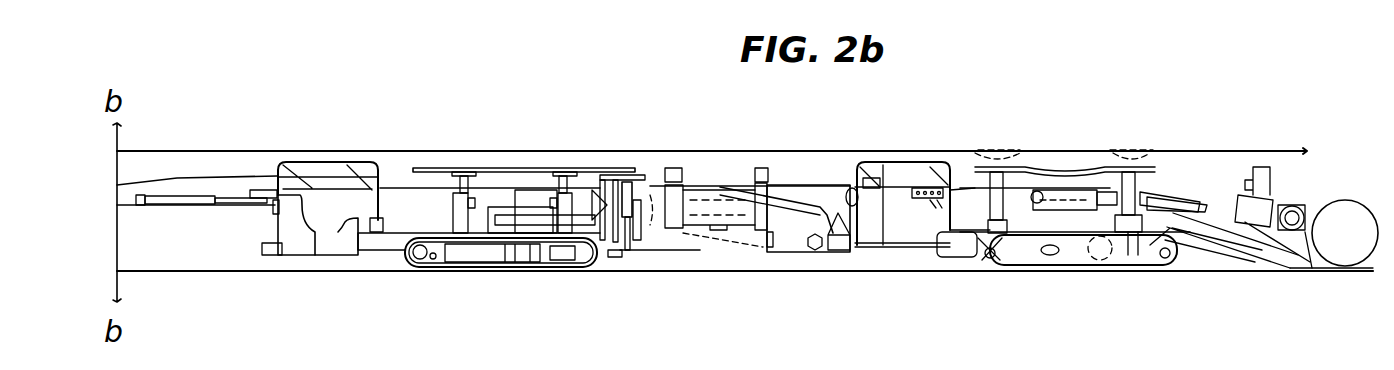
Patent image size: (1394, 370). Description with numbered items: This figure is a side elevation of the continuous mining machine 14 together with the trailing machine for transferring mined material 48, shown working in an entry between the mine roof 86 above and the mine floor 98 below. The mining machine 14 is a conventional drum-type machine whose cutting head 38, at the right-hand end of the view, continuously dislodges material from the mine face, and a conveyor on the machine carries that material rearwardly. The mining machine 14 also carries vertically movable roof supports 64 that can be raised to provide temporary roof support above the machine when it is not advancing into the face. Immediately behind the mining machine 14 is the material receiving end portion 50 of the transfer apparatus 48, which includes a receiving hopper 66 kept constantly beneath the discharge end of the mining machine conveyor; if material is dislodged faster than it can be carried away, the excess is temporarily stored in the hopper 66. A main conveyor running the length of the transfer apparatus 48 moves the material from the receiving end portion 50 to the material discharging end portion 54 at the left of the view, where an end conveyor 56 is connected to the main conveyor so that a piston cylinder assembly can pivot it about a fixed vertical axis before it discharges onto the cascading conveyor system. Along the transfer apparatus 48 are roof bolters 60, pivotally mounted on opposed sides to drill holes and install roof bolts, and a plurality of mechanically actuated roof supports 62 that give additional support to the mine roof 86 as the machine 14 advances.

The continuous mining machine 14 is at (966, 156).
The cutting head 38 is at (1352, 212).
The machine for transferring mined material 48 is at (537, 161).
The material receiving end portion 50 is at (840, 250).
The material discharging end portion 54 is at (207, 166).
The end conveyor 56 is at (133, 197).
The roof bolters 60 is at (627, 190).
The mechanically actuated roof supports 62 is at (430, 168).
The vertically movable roof supports 64 is at (1150, 175).
The receiving hopper 66 is at (805, 245).
The mine roof 86 is at (792, 152).
The mine floor 98 is at (672, 270).